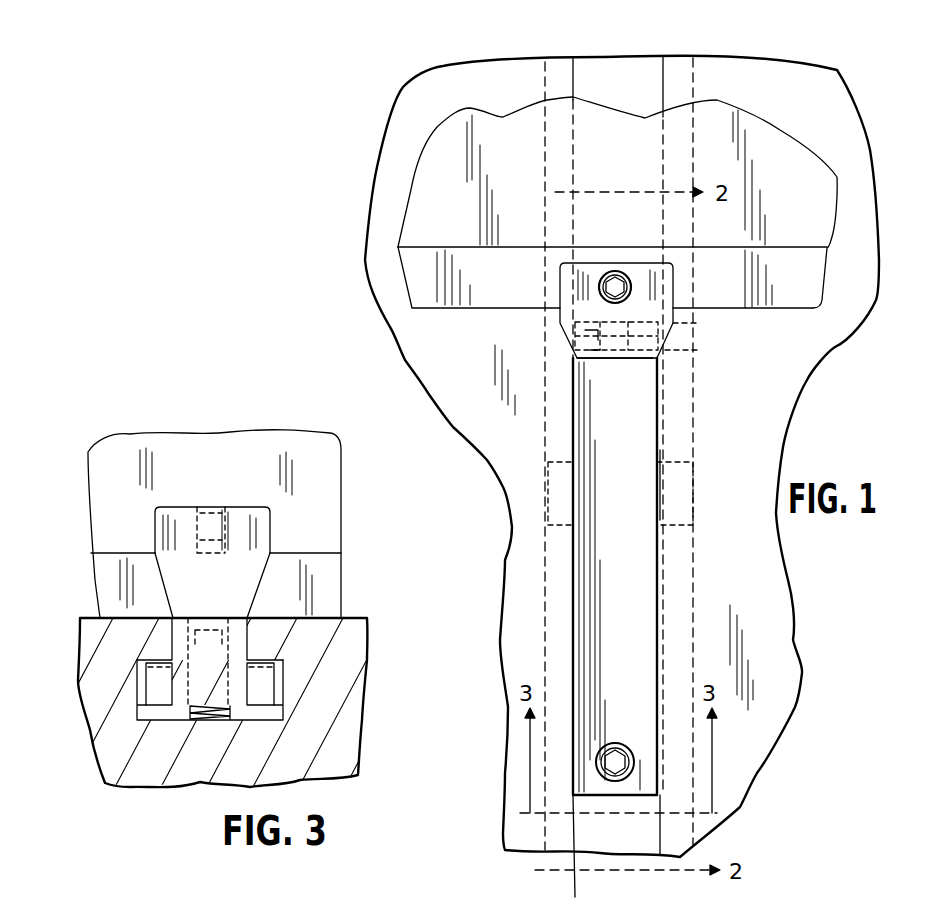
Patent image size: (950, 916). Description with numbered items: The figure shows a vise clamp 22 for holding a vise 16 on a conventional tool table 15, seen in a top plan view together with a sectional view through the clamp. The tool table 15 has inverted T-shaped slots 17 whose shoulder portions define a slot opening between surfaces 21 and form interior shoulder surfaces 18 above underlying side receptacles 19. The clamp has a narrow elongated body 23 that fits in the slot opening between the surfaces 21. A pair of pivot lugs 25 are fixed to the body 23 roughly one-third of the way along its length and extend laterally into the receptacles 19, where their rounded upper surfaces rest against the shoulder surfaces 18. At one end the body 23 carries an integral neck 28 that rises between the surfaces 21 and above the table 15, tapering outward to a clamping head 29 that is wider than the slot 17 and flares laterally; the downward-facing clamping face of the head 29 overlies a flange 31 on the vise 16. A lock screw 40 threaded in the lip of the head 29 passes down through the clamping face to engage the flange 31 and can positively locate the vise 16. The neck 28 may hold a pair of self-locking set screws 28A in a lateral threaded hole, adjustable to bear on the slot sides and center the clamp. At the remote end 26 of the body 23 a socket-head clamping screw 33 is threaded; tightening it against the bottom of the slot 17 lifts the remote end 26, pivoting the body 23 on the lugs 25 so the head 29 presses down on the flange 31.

In FIG. 1, the tool table 15 is at (522, 480).
In FIG. 3, the tool table 15 is at (142, 768).
In FIG. 1, the vise 16 is at (443, 137).
In FIG. 3, the vise 16 is at (214, 524).
In FIG. 1, the slot 17 is at (617, 68).
In FIG. 3, the interior shoulder surfaces 18 is at (155, 662).
In FIG. 1, the side receptacles 19 is at (560, 80).
In FIG. 3, the side receptacles 19 is at (150, 712).
In FIG. 1, the slot opening surfaces 21 is at (660, 520).
In FIG. 3, the slot opening surfaces 21 is at (245, 617).
In FIG. 1, the vise clamp 22 is at (645, 425).
In FIG. 1, the elongated body 23 is at (640, 570).
In FIG. 1, the pivot lugs 25 is at (565, 465).
In FIG. 3, the pivot lugs 25 is at (155, 680).
In FIG. 1, the remote end 26 is at (645, 768).
In FIG. 3, the neck portion 28 is at (253, 585).
In FIG. 1, the self-locking set screws 28A is at (690, 345).
In FIG. 1, the clamping head 29 is at (655, 295).
In FIG. 3, the clamping head 29 is at (250, 520).
In FIG. 1, the flange 31 is at (786, 298).
In FIG. 3, the flange 31 is at (292, 563).
In FIG. 1, the clamping screw 33 is at (612, 742).
In FIG. 3, the clamping screw 33 is at (210, 720).
In FIG. 1, the lock screw 40 is at (600, 294).
In FIG. 3, the lock screw 40 is at (197, 525).